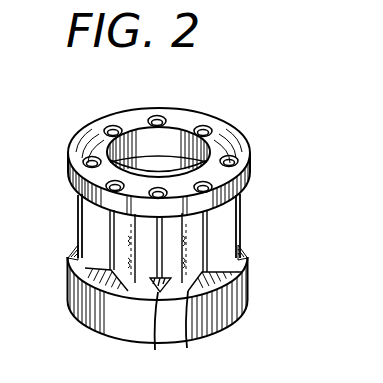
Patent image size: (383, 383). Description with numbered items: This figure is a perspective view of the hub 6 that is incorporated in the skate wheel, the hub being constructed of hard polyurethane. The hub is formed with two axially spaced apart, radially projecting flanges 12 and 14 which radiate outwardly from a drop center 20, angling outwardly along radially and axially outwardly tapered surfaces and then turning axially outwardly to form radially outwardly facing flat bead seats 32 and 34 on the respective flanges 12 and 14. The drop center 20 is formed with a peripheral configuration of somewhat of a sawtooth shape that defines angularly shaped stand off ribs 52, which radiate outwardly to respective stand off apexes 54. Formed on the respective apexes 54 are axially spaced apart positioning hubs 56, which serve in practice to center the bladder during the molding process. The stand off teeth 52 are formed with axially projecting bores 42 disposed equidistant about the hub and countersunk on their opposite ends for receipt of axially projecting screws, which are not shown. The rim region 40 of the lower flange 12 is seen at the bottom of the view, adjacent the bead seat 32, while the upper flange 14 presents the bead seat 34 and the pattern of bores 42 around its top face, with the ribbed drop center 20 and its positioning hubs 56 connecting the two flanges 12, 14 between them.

The spool assembly 6 is at (254, 141).
The flange 12 is at (68, 299).
The flange 14 is at (70, 177).
The drop center 20 is at (244, 208).
The bead seat 32 is at (99, 329).
The bead seat 34 is at (100, 118).
The lower flange rim 40 is at (244, 312).
The axially projecting bores 42 is at (152, 118).
The stand off ribs 52 is at (154, 325).
The stand off apexes 54 is at (199, 330).
The positioning hubs 56 is at (75, 241).